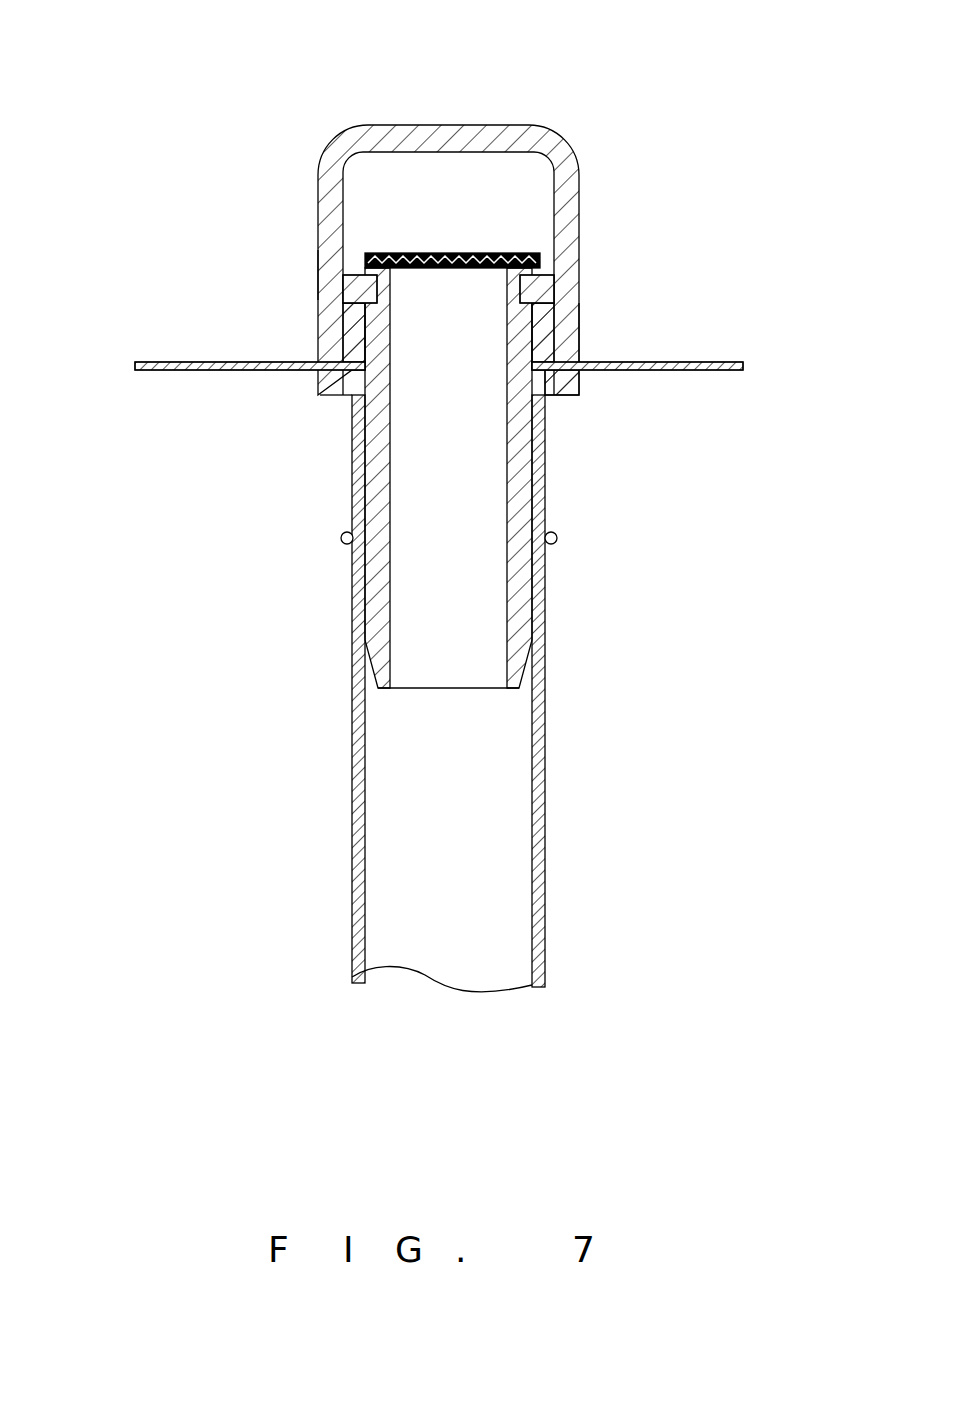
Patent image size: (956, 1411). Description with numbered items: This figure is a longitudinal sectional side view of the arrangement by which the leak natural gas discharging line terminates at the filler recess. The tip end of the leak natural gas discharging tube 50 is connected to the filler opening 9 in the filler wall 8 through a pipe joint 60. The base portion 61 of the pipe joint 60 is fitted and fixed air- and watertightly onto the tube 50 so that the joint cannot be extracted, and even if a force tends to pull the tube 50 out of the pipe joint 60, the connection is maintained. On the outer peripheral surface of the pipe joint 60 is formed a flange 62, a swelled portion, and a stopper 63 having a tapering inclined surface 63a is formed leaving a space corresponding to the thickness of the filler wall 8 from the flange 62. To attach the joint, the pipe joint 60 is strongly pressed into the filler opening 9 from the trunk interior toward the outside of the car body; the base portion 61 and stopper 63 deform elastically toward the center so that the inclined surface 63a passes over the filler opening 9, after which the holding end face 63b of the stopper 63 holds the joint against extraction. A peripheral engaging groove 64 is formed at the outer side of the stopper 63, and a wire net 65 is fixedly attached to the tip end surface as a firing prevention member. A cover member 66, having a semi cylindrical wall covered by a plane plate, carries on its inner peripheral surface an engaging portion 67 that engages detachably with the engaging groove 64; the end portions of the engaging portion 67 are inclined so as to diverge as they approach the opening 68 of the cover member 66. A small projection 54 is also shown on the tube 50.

The filler wall 8 is at (716, 362).
The filler opening 9 is at (345, 392).
The leak natural gas discharging tube 50 is at (546, 860).
The projection 54 is at (557, 538).
The pipe joint 60 is at (446, 720).
The base portion 61 is at (380, 592).
The flange 62 is at (568, 385).
The stopper 63 is at (556, 323).
The inclined surface 63a is at (336, 333).
The holding end face 63b is at (580, 334).
The engaging groove 64 is at (325, 298).
The wire net 65 is at (447, 252).
The cover member 66 is at (605, 130).
The engaging portion 67 is at (330, 282).
The opening 68 is at (524, 212).